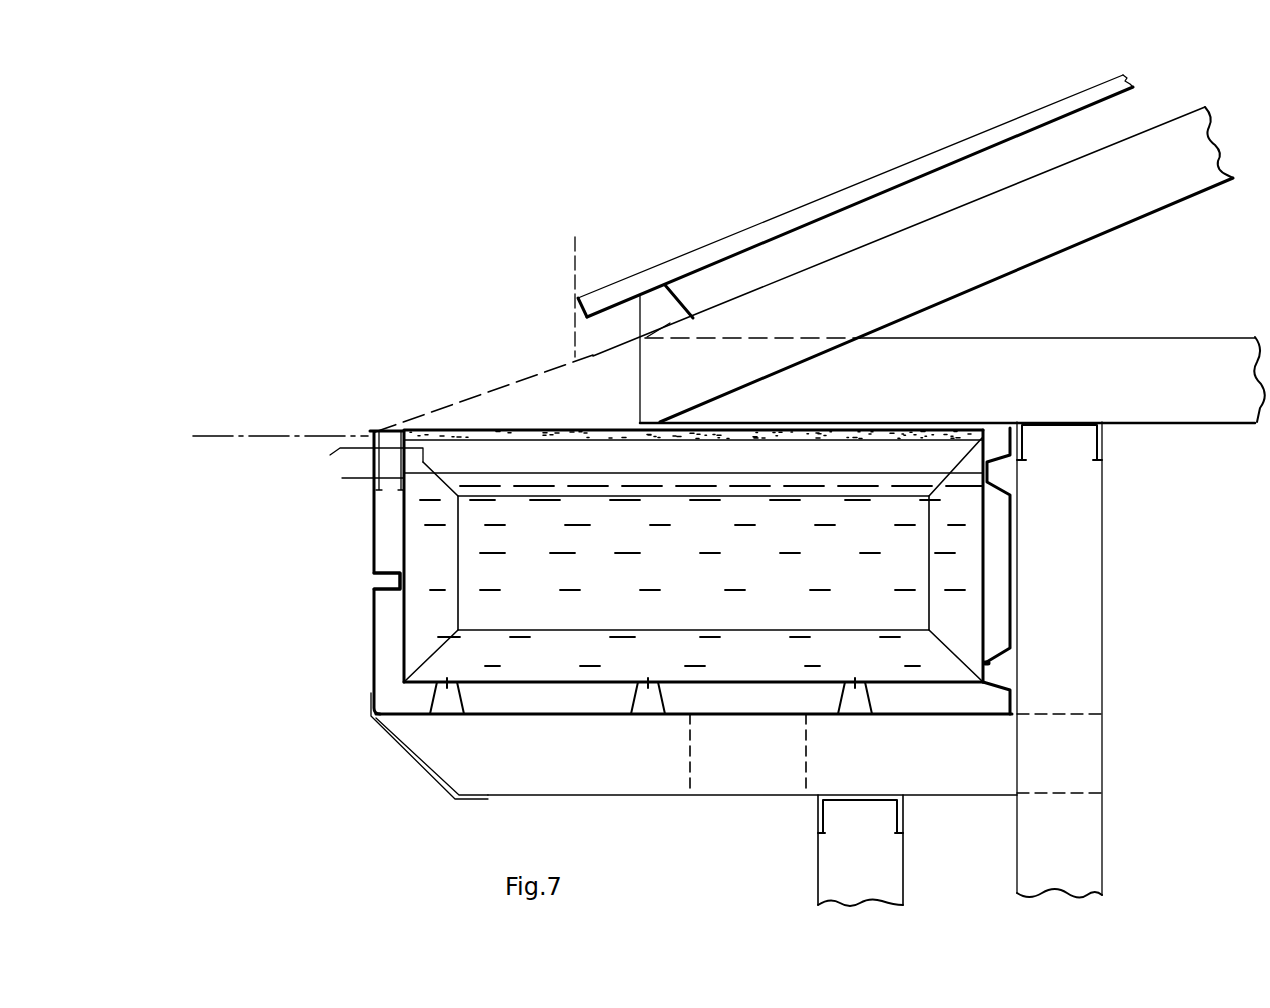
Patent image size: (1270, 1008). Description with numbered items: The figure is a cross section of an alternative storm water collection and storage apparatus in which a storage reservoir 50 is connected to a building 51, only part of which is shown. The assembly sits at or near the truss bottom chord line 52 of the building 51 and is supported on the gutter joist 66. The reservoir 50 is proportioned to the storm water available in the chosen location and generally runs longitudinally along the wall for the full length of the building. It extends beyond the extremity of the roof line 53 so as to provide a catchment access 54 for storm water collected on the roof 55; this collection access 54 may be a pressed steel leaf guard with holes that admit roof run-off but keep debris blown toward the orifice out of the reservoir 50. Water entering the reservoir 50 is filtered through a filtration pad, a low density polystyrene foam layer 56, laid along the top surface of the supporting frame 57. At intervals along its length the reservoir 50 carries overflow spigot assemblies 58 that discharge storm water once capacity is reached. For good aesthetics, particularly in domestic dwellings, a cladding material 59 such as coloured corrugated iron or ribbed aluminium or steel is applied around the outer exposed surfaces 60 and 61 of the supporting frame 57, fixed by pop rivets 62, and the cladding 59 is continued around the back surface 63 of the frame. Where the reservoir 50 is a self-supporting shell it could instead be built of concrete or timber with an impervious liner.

The storage reservoir 50 is at (797, 580).
The building 51 is at (680, 188).
The truss bottom chord line 52 is at (287, 433).
The roof line 53 is at (575, 268).
The catchment access 54 is at (493, 383).
The roof 55 is at (855, 186).
The low density polystyrene foam layer 56 is at (508, 430).
The supporting frame 57 is at (583, 446).
The overflow spigot assembly 58 is at (335, 466).
The cladding material 59 is at (372, 545).
The outer exposed surface 60 is at (407, 547).
The outer exposed surface 61 is at (563, 680).
The pop rivet 62 is at (403, 587).
The back surface 63 is at (990, 557).
The gutter joist 66 is at (450, 760).